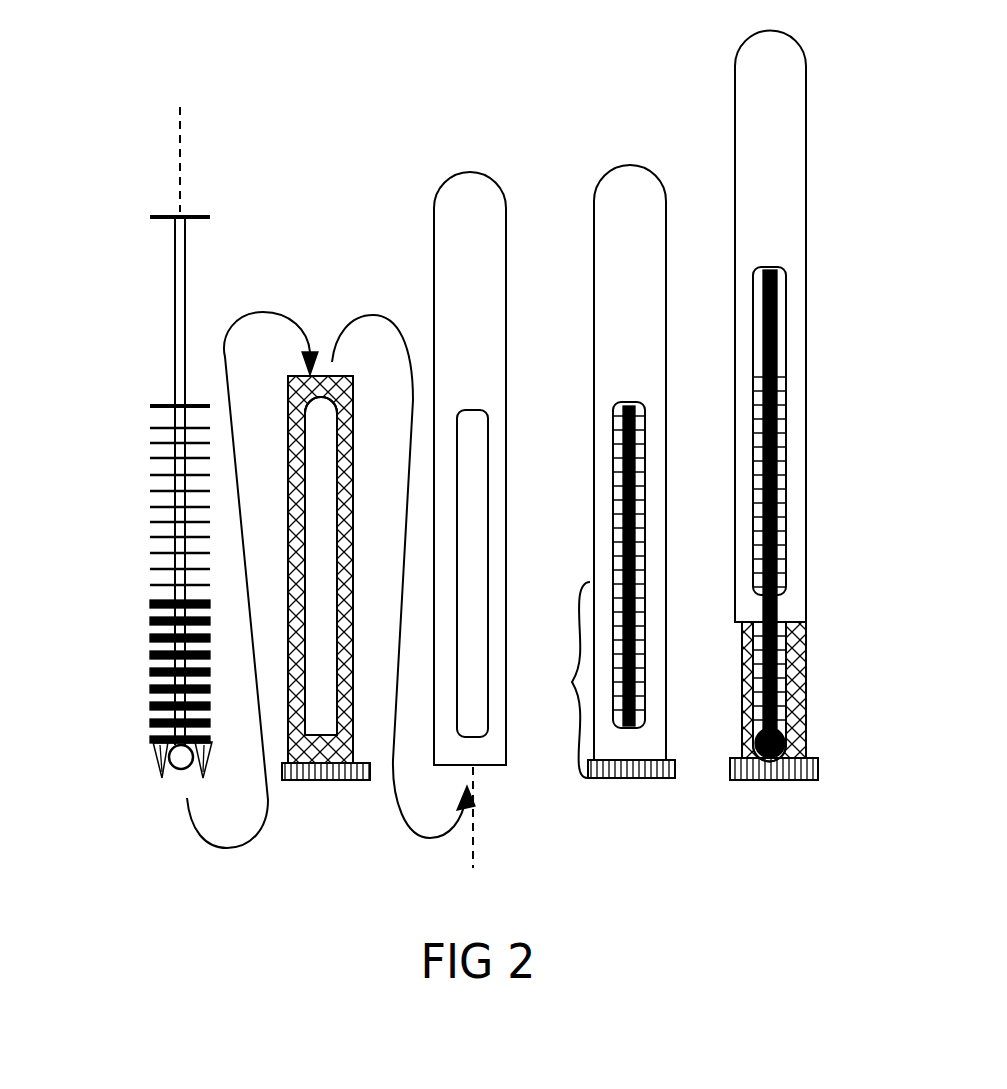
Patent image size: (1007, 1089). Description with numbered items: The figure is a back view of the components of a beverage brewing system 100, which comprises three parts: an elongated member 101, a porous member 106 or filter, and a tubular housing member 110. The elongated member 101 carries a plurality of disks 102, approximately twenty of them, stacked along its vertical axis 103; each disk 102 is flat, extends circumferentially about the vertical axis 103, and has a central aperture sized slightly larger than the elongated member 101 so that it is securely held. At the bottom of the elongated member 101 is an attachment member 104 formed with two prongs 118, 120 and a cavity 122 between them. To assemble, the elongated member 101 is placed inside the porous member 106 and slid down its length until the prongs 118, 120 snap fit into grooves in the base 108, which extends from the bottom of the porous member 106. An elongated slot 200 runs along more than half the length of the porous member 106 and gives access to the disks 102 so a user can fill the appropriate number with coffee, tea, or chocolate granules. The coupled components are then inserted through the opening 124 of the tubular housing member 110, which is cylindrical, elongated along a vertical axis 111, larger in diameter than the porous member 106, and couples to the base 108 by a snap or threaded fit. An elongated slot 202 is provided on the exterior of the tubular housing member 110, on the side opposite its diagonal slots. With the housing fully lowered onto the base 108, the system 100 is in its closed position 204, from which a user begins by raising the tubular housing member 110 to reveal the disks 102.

The beverage brewing system 100 is at (596, 169).
The elongated member 101 is at (173, 305).
The disks 102 is at (150, 428).
The vertical axis 103 is at (175, 140).
The attachment member 104 is at (155, 747).
The porous member 106 is at (320, 376).
The base 108 is at (350, 785).
The tubular housing member 110 is at (468, 172).
The vertical axis 111 is at (470, 833).
The prong 118 is at (160, 757).
The prong 120 is at (205, 757).
The cavity 122 is at (173, 775).
The opening 124 is at (480, 772).
The elongated slot 200 is at (318, 442).
The elongated slot 202 is at (488, 483).
The closed position 204 is at (550, 680).